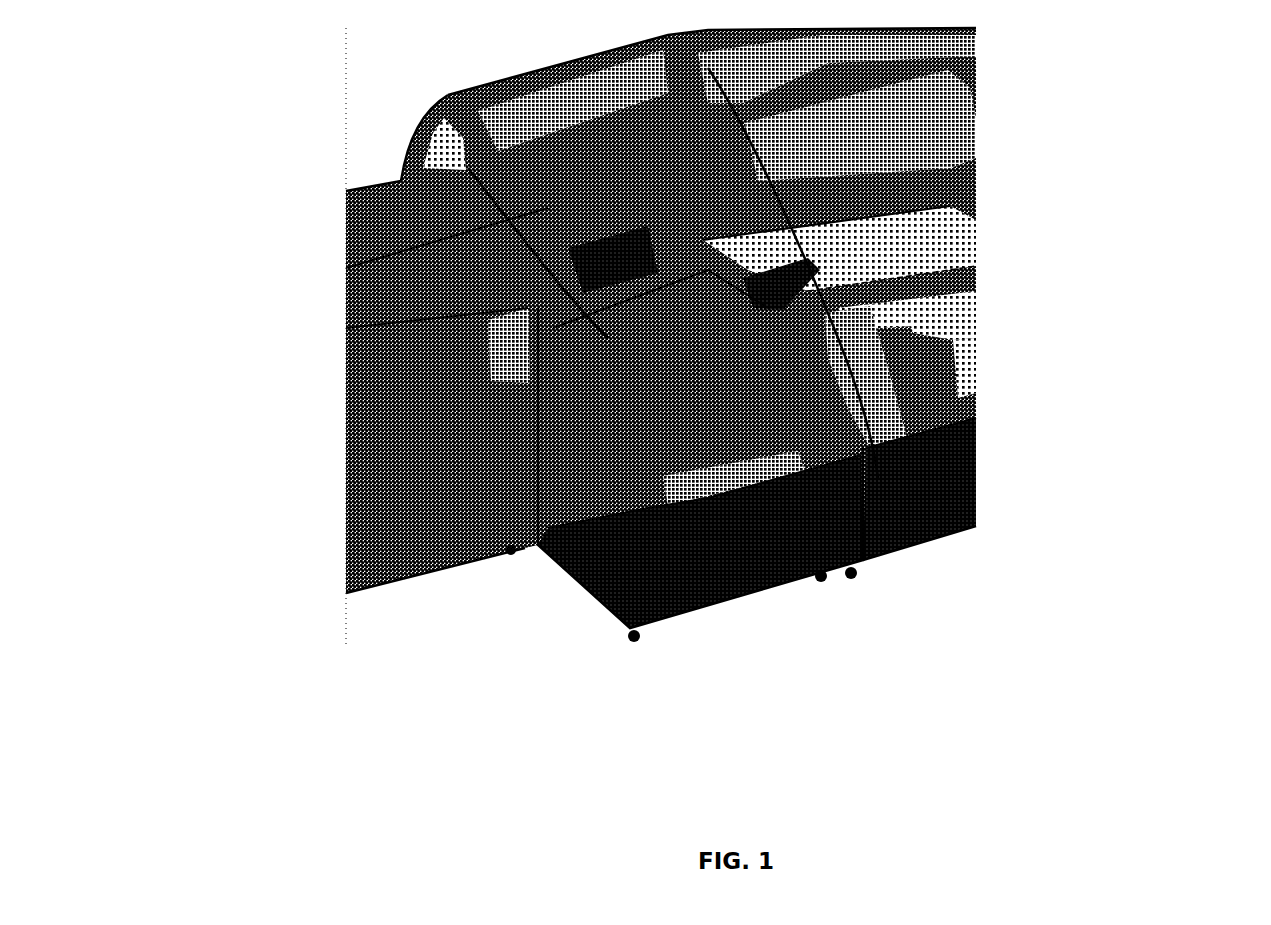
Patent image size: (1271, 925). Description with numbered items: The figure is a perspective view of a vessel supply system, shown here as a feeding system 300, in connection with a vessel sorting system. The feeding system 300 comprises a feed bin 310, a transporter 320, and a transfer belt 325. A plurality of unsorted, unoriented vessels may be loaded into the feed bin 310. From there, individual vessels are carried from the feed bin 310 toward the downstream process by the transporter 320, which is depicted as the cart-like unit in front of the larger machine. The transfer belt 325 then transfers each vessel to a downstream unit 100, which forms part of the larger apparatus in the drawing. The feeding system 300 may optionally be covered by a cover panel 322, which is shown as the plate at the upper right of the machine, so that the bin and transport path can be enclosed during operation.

The downstream unit 100 is at (608, 269).
The feeding system 300 is at (290, 652).
The feed bin 310 is at (775, 427).
The transporter 320 is at (725, 408).
The cover panel 322 is at (905, 230).
The transfer belt 325 is at (767, 302).